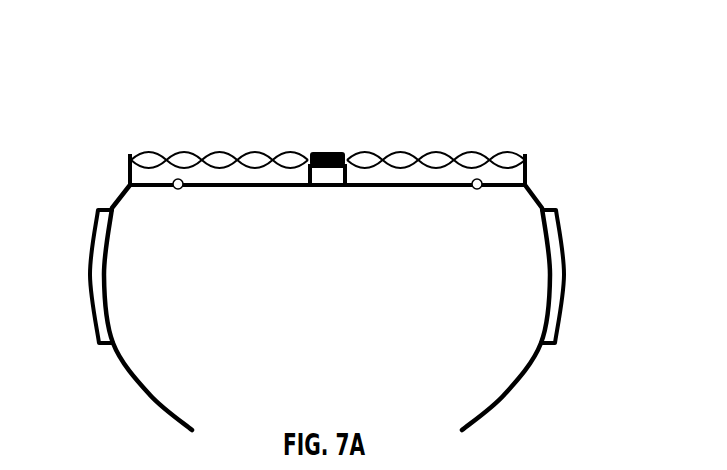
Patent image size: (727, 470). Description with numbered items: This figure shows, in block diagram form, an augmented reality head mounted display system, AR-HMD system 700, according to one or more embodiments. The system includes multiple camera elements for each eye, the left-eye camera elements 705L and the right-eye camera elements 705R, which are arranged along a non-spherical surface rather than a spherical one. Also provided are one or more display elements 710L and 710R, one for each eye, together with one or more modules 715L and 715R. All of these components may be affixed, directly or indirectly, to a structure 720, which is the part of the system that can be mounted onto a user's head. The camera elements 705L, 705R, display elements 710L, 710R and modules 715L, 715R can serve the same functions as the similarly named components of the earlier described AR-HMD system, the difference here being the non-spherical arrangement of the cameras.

The AR-HMD system 700 is at (327, 105).
The camera elements for the left eye 705L is at (219, 124).
The camera elements for the right eye 705R is at (436, 124).
The display element 710L is at (212, 215).
The display element 710R is at (442, 215).
The module 715L is at (72, 241).
The module 715R is at (587, 241).
The structure 720 is at (327, 307).